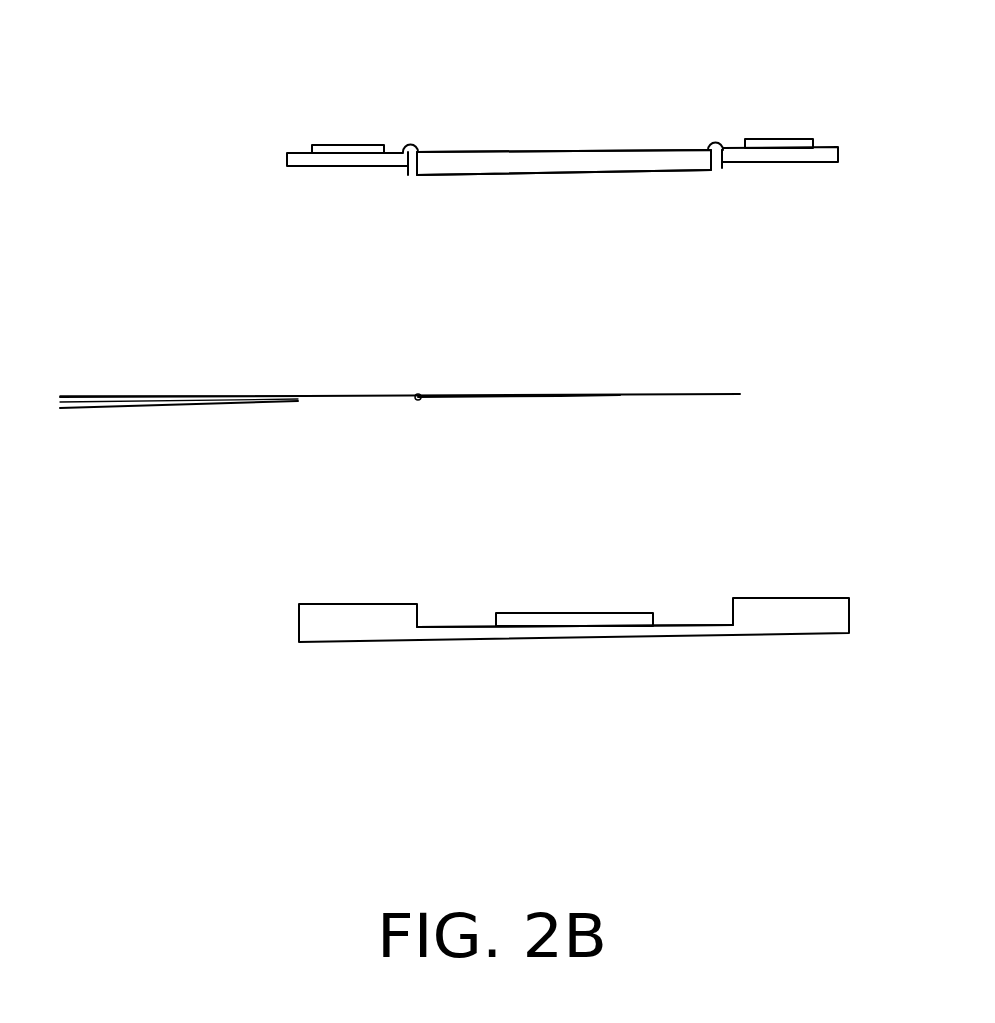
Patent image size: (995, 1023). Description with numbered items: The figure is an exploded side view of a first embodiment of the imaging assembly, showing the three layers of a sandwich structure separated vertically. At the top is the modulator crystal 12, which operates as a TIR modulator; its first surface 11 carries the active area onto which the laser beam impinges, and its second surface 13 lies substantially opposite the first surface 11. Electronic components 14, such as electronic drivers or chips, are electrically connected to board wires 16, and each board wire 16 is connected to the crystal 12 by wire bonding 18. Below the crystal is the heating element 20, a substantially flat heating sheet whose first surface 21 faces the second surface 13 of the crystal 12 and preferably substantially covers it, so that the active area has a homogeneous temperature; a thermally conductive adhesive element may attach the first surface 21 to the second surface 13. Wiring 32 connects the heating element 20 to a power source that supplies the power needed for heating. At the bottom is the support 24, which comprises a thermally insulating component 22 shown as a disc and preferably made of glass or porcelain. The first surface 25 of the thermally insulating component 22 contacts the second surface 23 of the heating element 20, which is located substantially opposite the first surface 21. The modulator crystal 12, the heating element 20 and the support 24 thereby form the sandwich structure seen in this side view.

The first surface 11 is at (562, 150).
The modulator crystal 12 is at (472, 145).
The second surface 13 is at (507, 175).
The electronic components 14 is at (342, 145).
The board wires 16 is at (840, 150).
The wire bonding 18 is at (713, 140).
The heating element 20 is at (740, 394).
The first surface 21 is at (541, 396).
The second surface 23 is at (588, 397).
The wiring 32 is at (152, 398).
The thermally insulating component 22 is at (546, 620).
The support 24 is at (337, 628).
The first surface 25 is at (577, 612).